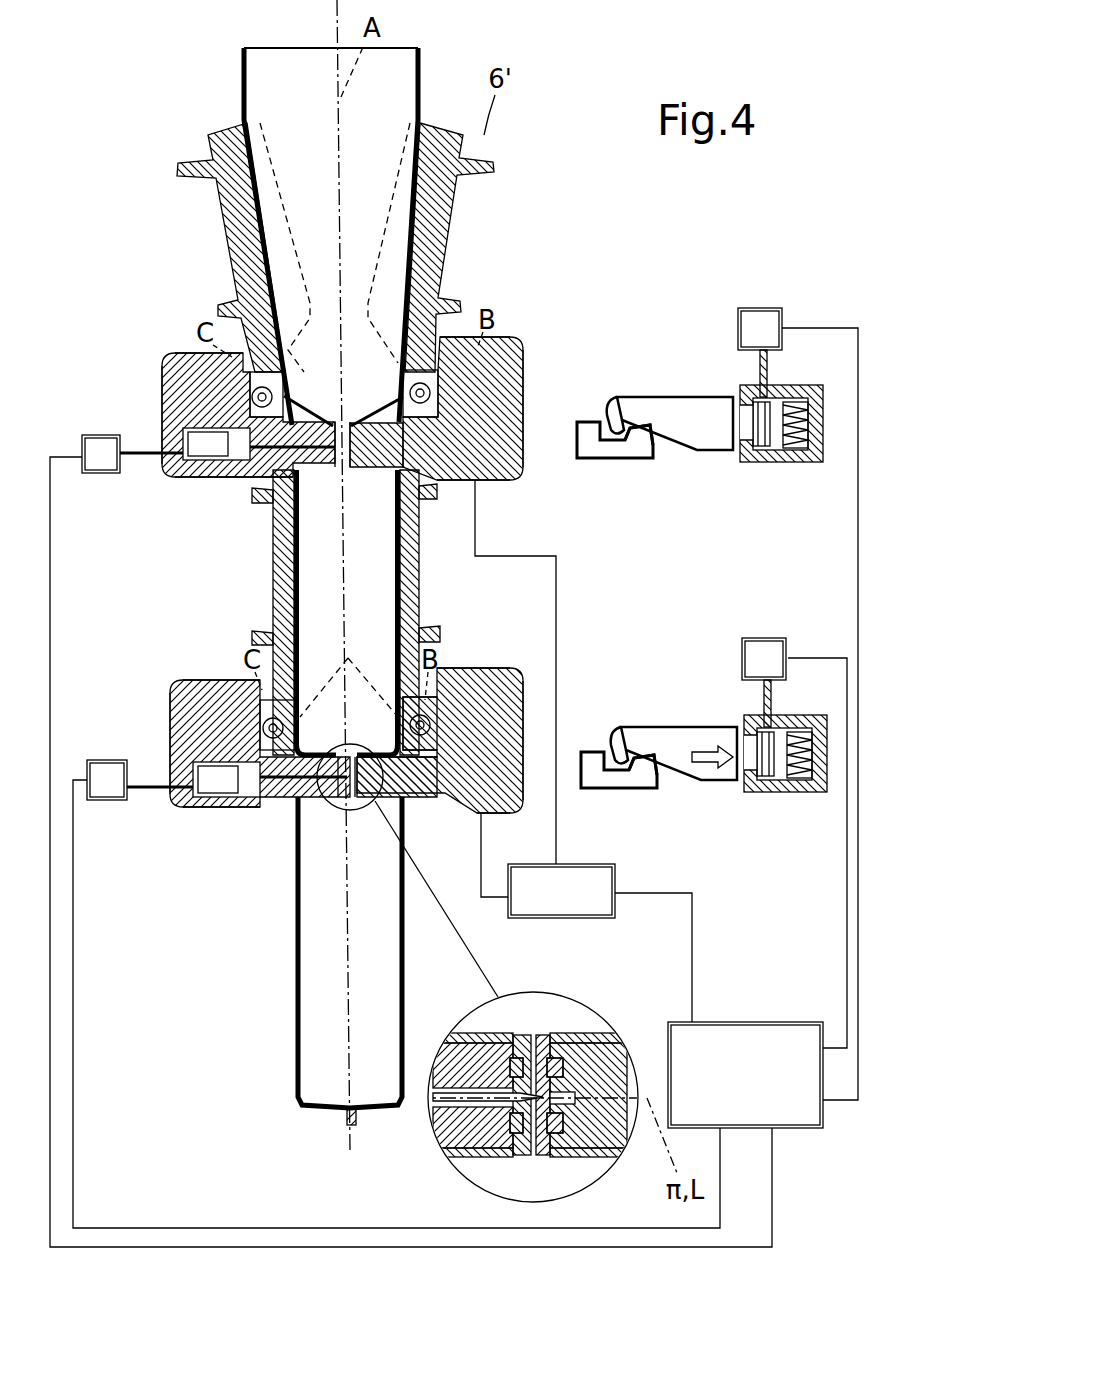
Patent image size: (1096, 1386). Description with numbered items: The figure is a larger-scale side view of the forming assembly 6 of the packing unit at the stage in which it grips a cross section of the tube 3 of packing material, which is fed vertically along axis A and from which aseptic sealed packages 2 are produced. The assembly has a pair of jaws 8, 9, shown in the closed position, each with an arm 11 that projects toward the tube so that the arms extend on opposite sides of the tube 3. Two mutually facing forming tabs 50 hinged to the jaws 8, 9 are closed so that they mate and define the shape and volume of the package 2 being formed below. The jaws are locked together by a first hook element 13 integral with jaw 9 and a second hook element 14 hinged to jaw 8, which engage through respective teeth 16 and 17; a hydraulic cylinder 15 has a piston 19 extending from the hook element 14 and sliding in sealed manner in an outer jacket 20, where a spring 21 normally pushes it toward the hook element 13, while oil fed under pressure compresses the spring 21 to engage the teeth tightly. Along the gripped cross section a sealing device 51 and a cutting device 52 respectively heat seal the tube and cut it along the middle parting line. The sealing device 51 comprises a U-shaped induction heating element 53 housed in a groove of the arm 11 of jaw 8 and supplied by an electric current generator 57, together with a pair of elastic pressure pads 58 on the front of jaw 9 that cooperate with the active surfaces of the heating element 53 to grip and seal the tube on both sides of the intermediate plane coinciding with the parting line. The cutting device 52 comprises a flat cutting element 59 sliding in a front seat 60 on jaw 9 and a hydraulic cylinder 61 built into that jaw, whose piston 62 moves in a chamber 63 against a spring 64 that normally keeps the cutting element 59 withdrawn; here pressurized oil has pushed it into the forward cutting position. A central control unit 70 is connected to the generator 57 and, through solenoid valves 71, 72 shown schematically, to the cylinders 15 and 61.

The aseptic sealed package 2 is at (372, 985).
The tube of packing material 3 is at (385, 92).
The forming assembly 6 is at (258, 616).
The jaw 8 is at (470, 365).
The jaw 9 is at (173, 353).
The arm 11 is at (165, 415).
The first hook element 13 is at (590, 460).
The second hook element 14 is at (678, 420).
The hydraulic cylinder 15 is at (752, 464).
The tooth 16 is at (643, 452).
The tooth 17 is at (622, 400).
The piston 19 is at (785, 462).
The outer jacket 20 is at (790, 392).
The spring 21 is at (818, 432).
The forming tab 50 is at (216, 222).
The sealing device 51 is at (438, 478).
The cutting device 52 is at (282, 497).
The induction heating element 53 is at (372, 420).
The electric current generator 57 is at (560, 905).
The pressure pad 58 is at (298, 405).
The cutting element 59 is at (262, 455).
The front seat 60 is at (300, 797).
The hydraulic cylinder 61 is at (205, 470).
The piston 62 is at (225, 800).
The chamber 63 is at (210, 798).
The spring 64 is at (225, 415).
The central control unit 70 is at (780, 1112).
The solenoid valve 71 is at (757, 306).
The solenoid valve 72 is at (105, 455).